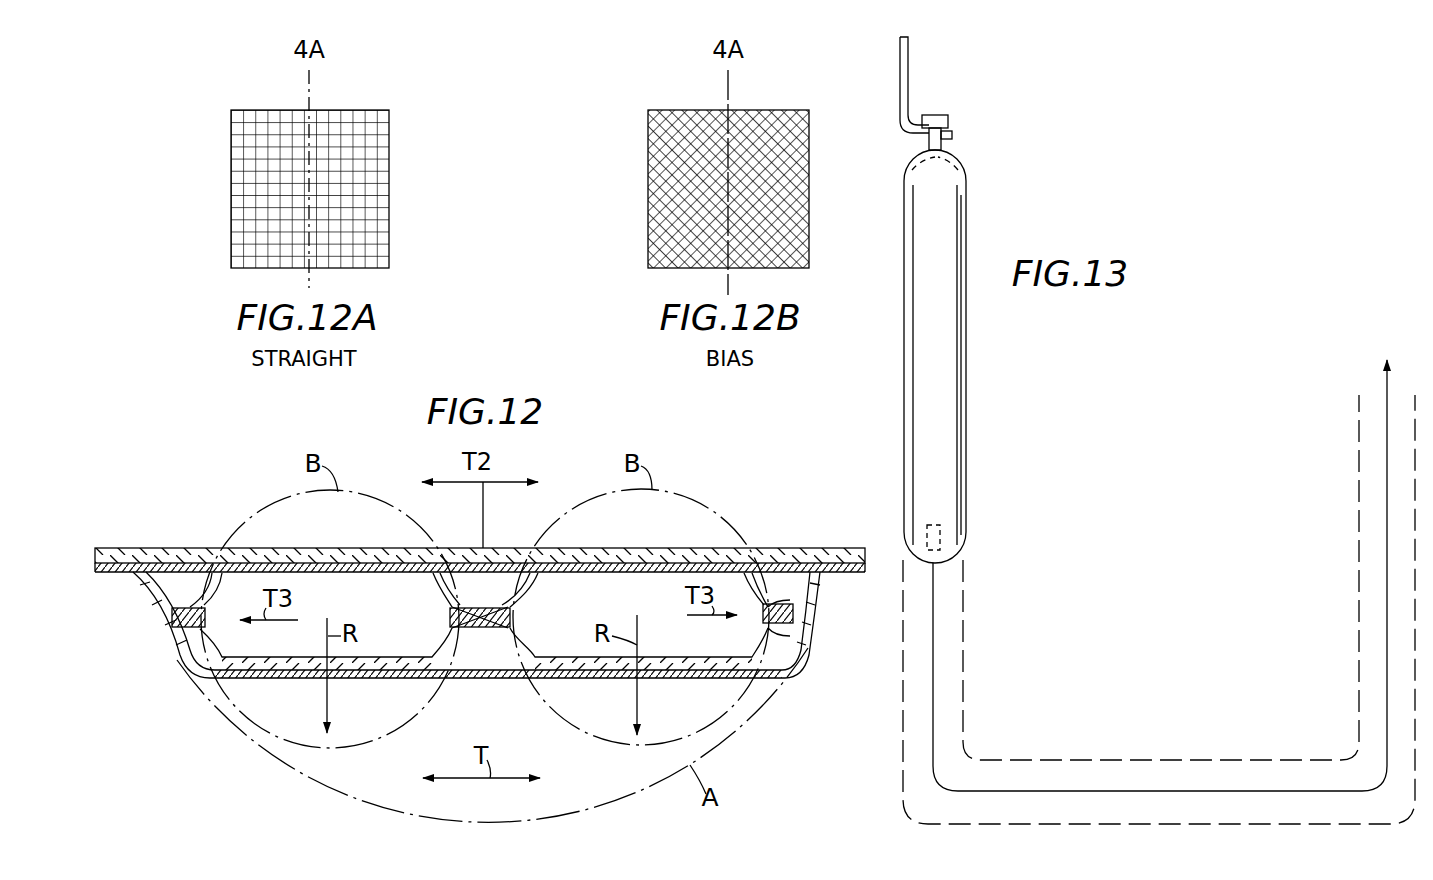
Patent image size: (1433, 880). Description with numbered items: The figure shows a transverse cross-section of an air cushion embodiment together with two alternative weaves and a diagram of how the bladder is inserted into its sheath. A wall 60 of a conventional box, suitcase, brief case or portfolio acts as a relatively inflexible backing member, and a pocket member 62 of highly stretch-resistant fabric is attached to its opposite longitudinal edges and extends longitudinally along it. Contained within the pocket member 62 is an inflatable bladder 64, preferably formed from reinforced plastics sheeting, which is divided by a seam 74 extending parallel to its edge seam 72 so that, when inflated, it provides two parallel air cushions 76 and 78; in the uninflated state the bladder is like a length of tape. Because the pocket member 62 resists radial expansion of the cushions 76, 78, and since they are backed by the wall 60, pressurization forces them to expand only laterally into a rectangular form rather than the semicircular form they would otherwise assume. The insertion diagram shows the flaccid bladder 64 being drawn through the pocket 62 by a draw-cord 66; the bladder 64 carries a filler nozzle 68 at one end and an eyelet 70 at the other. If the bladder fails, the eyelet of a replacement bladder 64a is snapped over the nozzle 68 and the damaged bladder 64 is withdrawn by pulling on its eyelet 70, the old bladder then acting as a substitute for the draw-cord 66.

In FIG. 12, the wall 60 is at (812, 550).
In FIG. 13, the wall 60 is at (1416, 520).
In FIG. 12, the pocket member 62 is at (795, 628).
In FIG. 13, the pocket member 62 is at (1357, 570).
In FIG. 12, the inflatable bladder 64 is at (192, 664).
In FIG. 13, the inflatable bladder 64 is at (962, 437).
In FIG. 13, the replacement bladder 64a is at (902, 62).
In FIG. 13, the draw-cord 66 is at (1387, 415).
In FIG. 13, the filler nozzle 68 is at (950, 121).
In FIG. 13, the eyelet 70 is at (963, 542).
In FIG. 12, the edge seam 72 is at (187, 610).
In FIG. 12, the seam 74 is at (493, 617).
In FIG. 12, the air cushion 76 is at (340, 590).
In FIG. 12, the air cushion 78 is at (645, 595).